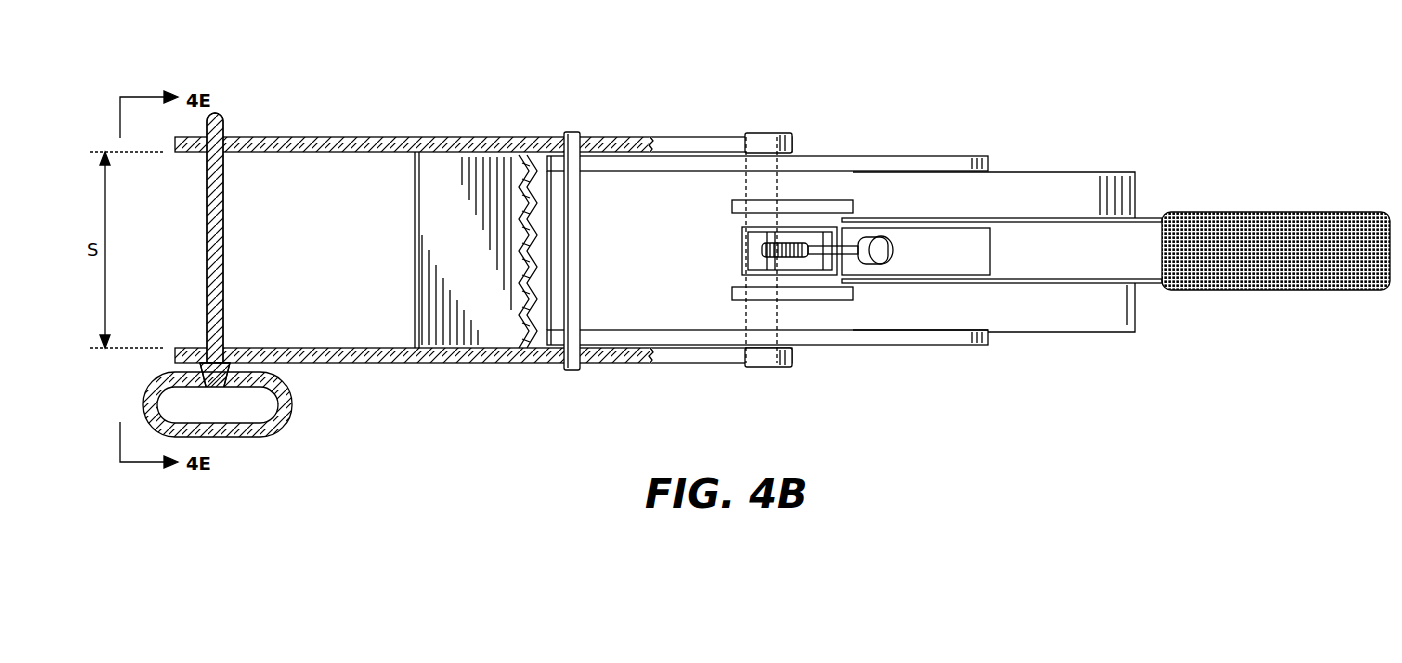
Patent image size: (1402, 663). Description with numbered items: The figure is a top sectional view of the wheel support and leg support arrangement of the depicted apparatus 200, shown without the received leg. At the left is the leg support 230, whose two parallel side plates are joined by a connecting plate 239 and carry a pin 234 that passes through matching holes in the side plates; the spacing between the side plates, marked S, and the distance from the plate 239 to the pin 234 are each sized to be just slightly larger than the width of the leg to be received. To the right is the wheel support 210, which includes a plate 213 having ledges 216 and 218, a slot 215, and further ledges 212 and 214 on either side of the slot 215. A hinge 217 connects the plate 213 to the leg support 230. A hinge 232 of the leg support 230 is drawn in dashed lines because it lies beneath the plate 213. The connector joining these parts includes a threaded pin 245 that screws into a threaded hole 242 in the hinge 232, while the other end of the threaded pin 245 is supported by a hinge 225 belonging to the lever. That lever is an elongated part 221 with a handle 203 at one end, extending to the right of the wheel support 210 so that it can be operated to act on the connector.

The device 200 is at (318, 72).
The handle 203 is at (1228, 212).
The wheel support 210 is at (1005, 130).
The ledge 212 is at (732, 207).
The plate 213 is at (1017, 185).
The ledge 214 is at (730, 293).
The slot 215 is at (810, 278).
The ledge 216 is at (878, 157).
The hinge 217 is at (573, 370).
The ledge 218 is at (928, 347).
The elongated part 221 is at (1085, 215).
The hinge 225 is at (882, 225).
The leg support 230 is at (502, 127).
The hinge 232 is at (750, 367).
The pin 234 is at (207, 280).
The plate 239 is at (427, 183).
The threaded hole 242 is at (762, 243).
The threaded pin 245 is at (795, 243).